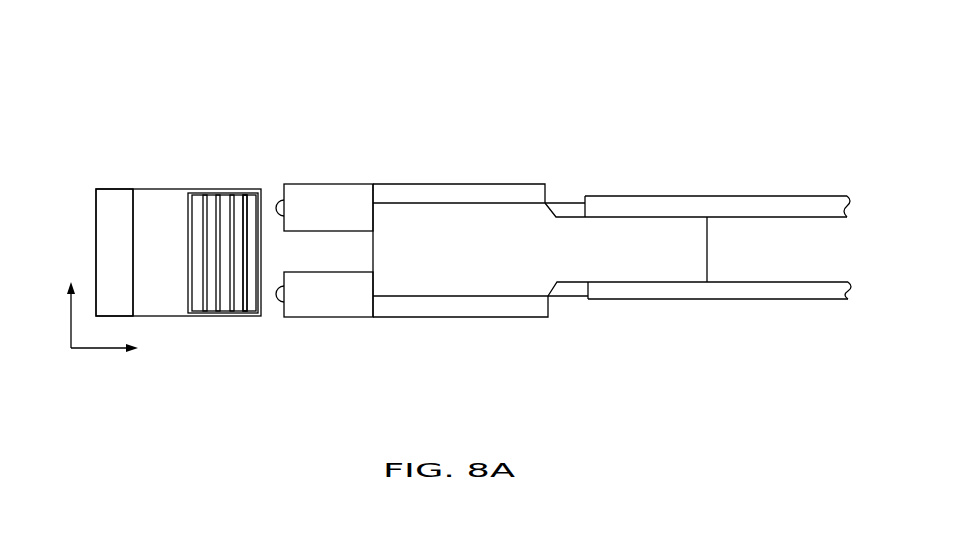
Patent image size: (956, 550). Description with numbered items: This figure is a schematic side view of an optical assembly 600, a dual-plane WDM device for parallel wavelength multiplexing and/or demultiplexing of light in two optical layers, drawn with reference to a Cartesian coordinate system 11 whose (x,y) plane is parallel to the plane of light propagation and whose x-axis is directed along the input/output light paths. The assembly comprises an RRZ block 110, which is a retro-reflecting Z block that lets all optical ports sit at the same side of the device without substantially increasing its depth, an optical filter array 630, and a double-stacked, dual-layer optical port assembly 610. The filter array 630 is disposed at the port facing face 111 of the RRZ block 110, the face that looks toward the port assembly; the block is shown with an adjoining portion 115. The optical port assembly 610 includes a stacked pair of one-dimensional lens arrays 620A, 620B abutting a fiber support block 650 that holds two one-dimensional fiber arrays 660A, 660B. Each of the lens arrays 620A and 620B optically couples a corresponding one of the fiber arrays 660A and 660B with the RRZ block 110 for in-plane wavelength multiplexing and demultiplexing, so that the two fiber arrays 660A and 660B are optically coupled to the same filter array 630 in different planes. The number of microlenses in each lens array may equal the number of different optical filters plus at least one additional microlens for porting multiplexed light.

The Cartesian coordinate system 11 is at (44, 334).
The RRZ block 110 is at (177, 128).
The port facing face 111 is at (220, 325).
The receptacle housing 115 is at (115, 189).
The optical assembly 600 is at (495, 35).
The optical port assembly 610 is at (507, 100).
The 1D lens array 620A is at (335, 182).
The 1D lens array 620B is at (318, 317).
The optical filter array 630 is at (222, 168).
The fiber support block 650 is at (472, 263).
The 1D fiber array 660A is at (562, 203).
The 1D fiber array 660B is at (577, 298).